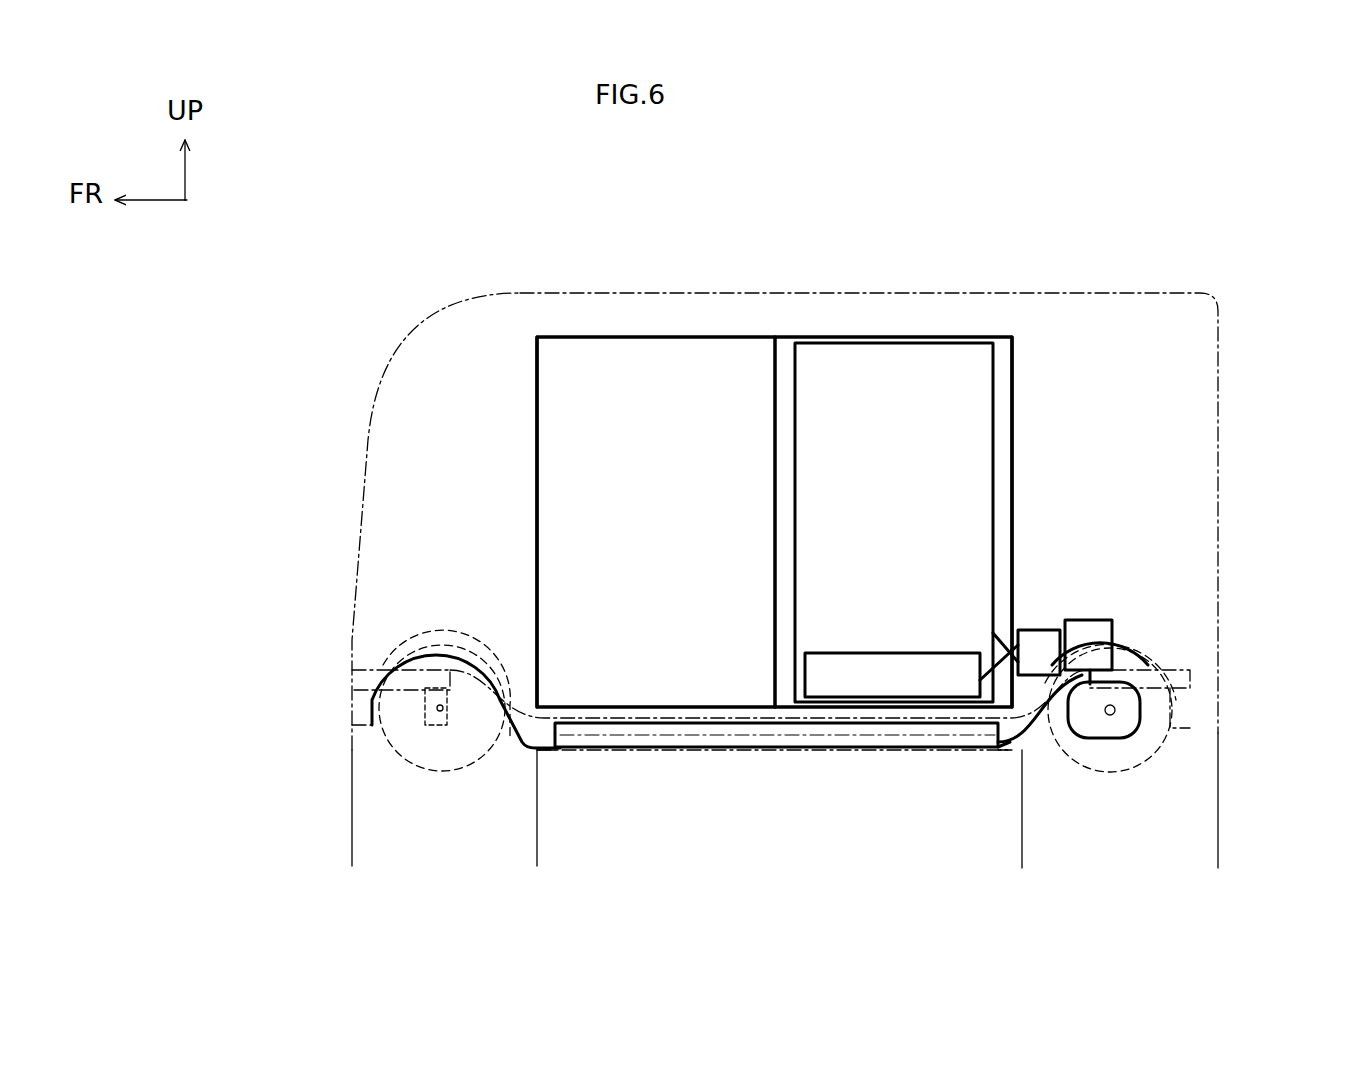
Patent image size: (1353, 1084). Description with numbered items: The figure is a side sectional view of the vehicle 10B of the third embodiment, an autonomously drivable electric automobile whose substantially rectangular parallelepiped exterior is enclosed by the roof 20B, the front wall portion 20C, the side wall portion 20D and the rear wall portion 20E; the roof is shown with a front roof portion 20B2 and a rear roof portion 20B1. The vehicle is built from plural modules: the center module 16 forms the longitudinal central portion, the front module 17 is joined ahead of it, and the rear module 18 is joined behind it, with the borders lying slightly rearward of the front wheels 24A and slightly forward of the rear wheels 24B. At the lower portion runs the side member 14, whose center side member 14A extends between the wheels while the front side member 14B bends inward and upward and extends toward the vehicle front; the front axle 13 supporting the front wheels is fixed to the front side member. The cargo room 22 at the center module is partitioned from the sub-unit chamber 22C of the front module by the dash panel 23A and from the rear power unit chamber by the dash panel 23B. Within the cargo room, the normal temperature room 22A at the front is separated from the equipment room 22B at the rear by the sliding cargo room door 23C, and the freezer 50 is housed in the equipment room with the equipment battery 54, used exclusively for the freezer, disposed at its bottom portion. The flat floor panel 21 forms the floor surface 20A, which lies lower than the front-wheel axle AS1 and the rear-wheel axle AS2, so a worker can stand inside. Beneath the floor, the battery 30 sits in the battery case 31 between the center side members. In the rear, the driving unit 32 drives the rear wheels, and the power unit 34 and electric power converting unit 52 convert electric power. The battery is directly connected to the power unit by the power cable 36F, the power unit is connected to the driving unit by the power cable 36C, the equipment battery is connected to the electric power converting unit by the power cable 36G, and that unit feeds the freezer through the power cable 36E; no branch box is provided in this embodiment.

The vehicle 10B is at (1093, 215).
The front axle 13 is at (410, 765).
The side member 14 is at (521, 762).
The center side member 14A is at (648, 752).
The front side member 14B is at (440, 655).
The center module 16 is at (539, 875).
The front module 17 is at (537, 875).
The rear module 18 is at (1215, 875).
The floor surface 20A is at (620, 707).
The roof 20B is at (563, 170).
The roof rear portion 20B1 is at (692, 293).
The roof front portion 20B2 is at (636, 346).
The front wall portion 20C is at (365, 512).
The side wall portion 20D is at (1170, 322).
The rear wall portion 20E is at (1218, 410).
The floor panel 21 is at (577, 707).
The cargo room 22 is at (903, 190).
The normal temperature room 22A is at (748, 350).
The equipment room 22B is at (890, 338).
The sub-unit chamber 22C is at (393, 612).
The dash panel 23A is at (537, 433).
The dash panel 23B is at (1013, 368).
The cargo room door 23C is at (773, 455).
The front wheel 24A is at (460, 770).
The rear wheel 24B is at (1105, 760).
The battery 30 is at (830, 748).
The battery case 31 is at (783, 752).
The driving unit 32 is at (1140, 760).
The power unit 34 is at (1093, 630).
The power cable 36C is at (1132, 652).
The power cable 36E is at (1000, 638).
The power cable 36F is at (1048, 748).
The power cable 36G is at (1005, 752).
The freezer 50 is at (997, 393).
The electric power converting unit 52 is at (1042, 635).
The equipment battery 54 is at (888, 683).
The axle of the front wheels AS1 is at (440, 708).
The axle of the rear wheels AS2 is at (1112, 710).